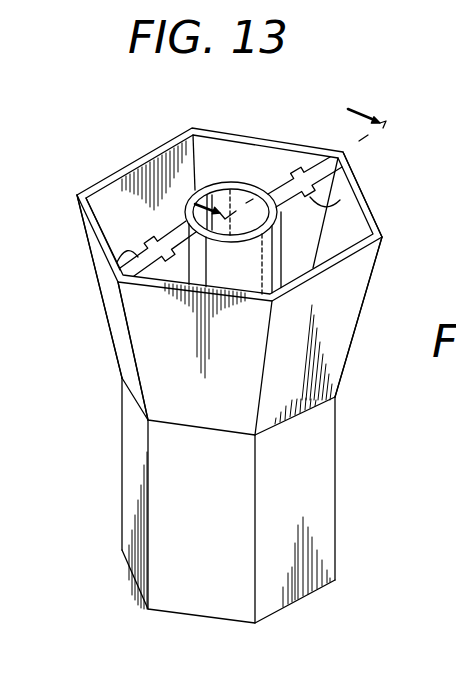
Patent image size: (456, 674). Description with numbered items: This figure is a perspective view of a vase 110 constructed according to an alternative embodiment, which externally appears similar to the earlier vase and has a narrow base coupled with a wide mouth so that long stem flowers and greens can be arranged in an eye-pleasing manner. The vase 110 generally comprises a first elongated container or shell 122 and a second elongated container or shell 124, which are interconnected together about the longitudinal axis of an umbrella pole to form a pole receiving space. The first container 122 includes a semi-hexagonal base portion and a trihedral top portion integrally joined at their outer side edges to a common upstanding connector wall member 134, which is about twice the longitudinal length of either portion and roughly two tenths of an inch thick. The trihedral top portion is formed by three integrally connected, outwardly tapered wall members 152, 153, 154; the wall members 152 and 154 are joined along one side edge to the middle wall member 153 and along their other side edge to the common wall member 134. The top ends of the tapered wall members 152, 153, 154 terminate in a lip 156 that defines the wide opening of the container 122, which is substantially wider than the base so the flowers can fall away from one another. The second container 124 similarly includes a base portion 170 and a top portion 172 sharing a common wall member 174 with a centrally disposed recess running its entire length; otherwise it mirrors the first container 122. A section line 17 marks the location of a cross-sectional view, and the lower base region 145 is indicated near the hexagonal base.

The vase 110 is at (221, 508).
The first elongated container 122 is at (116, 150).
The second elongated container 124 is at (394, 205).
The common upstanding connector wall member 134 is at (137, 246).
The lower hexagonal base 145 is at (135, 476).
The outwardly tapered wall member 152 is at (118, 326).
The outwardly tapered wall member 153 is at (103, 193).
The outwardly tapered wall member 154 is at (230, 150).
The lip 156 is at (168, 147).
The base portion 170 is at (349, 518).
The top portion 172 is at (370, 326).
The common wall member 174 is at (312, 203).
The section line 17- 17 is at (274, 160).